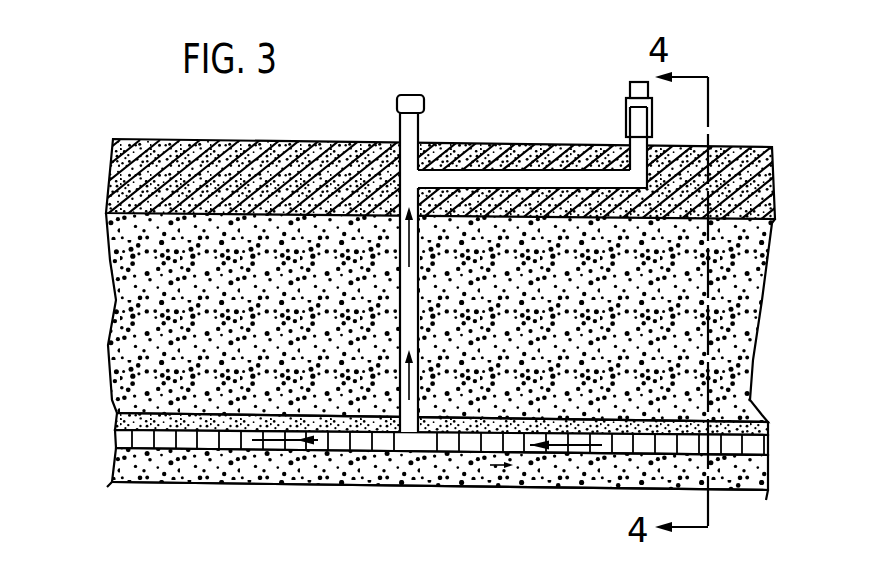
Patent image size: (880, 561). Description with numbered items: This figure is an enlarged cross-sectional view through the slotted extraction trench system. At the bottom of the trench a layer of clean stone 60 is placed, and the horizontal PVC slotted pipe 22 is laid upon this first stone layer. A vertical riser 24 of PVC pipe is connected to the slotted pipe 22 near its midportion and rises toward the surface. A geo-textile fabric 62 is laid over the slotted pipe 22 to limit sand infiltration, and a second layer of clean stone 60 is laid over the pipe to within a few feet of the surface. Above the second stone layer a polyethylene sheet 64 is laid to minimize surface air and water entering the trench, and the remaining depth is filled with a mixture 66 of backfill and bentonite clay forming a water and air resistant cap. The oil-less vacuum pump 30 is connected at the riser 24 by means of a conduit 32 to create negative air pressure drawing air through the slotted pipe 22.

The PVC slotted pipe 22 is at (377, 462).
The vertical riser 24 is at (418, 306).
The vacuum pump 30 is at (618, 132).
The conduit 32 is at (556, 219).
The clean stone 60 is at (135, 400).
The geo-textile fabric 62 is at (140, 417).
The polyethylene sheet 64 is at (128, 214).
The mixture of backfill and bentonite clay 66 is at (109, 181).